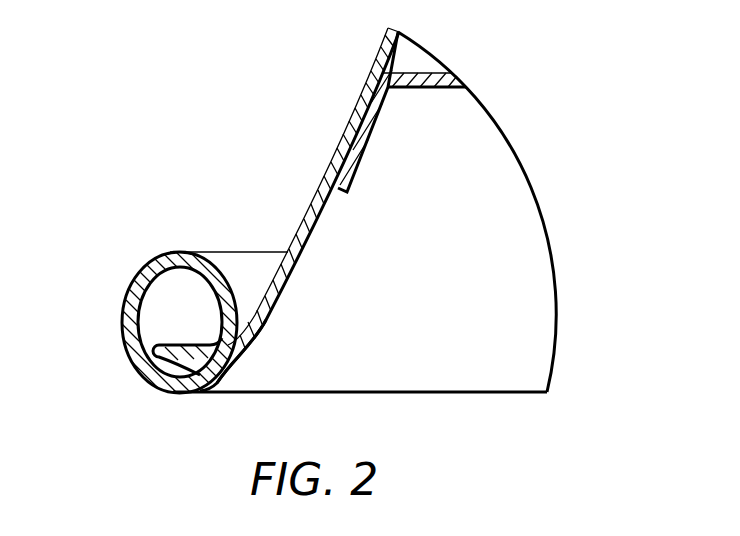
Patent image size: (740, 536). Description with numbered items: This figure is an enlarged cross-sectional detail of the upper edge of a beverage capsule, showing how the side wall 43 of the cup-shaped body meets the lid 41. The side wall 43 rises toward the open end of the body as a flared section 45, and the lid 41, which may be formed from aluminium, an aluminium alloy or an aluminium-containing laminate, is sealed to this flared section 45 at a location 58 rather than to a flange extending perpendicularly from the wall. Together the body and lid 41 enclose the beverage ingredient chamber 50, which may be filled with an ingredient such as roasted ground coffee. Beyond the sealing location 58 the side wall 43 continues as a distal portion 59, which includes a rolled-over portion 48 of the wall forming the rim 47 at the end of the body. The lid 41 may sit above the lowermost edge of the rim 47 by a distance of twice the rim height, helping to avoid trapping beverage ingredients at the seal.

The lid 41 is at (440, 92).
The side wall 43 is at (335, 131).
The flared section 45 is at (315, 200).
The rim 47 is at (125, 261).
The rolled-over portion 48 is at (190, 367).
The beverage ingredient chamber 50 is at (450, 293).
The location 58 is at (336, 197).
The distal portion 59 is at (225, 373).